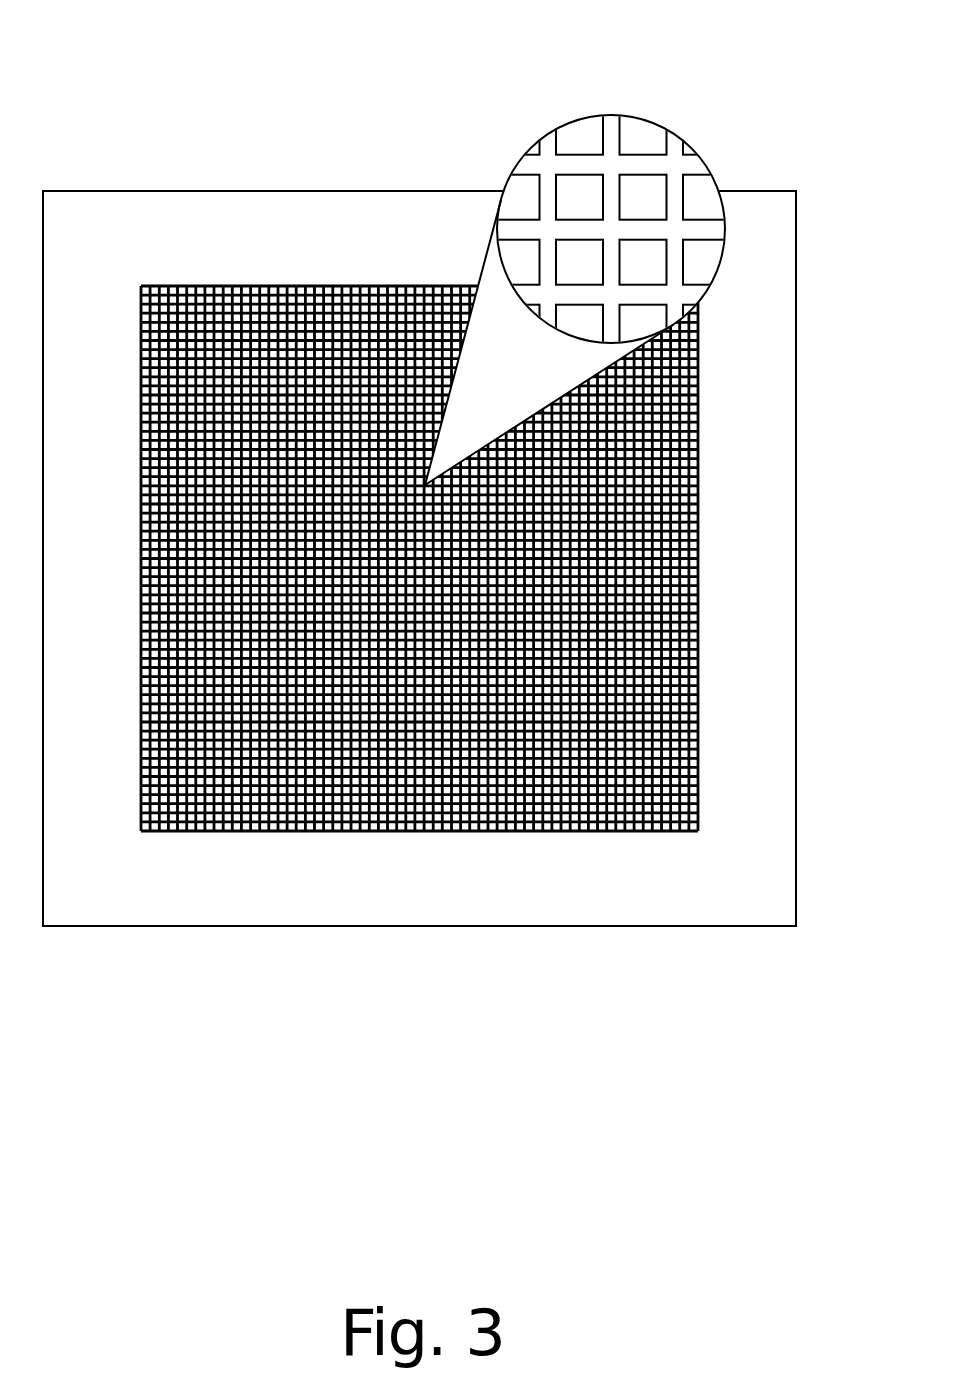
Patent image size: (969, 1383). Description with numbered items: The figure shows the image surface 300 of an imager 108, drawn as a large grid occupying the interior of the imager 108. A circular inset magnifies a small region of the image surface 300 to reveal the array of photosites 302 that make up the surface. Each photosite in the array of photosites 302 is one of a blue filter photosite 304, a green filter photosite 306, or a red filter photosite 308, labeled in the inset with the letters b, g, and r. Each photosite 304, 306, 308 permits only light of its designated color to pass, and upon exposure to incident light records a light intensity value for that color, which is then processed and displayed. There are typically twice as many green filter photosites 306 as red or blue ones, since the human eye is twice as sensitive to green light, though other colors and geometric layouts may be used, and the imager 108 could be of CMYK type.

The imager 108 is at (238, 240).
The image surface 300 is at (413, 317).
The array of photosites 302 is at (643, 103).
The blue filter photosite 304 is at (652, 188).
The green filter photosite 306 is at (558, 190).
The red filter photosite 308 is at (560, 258).